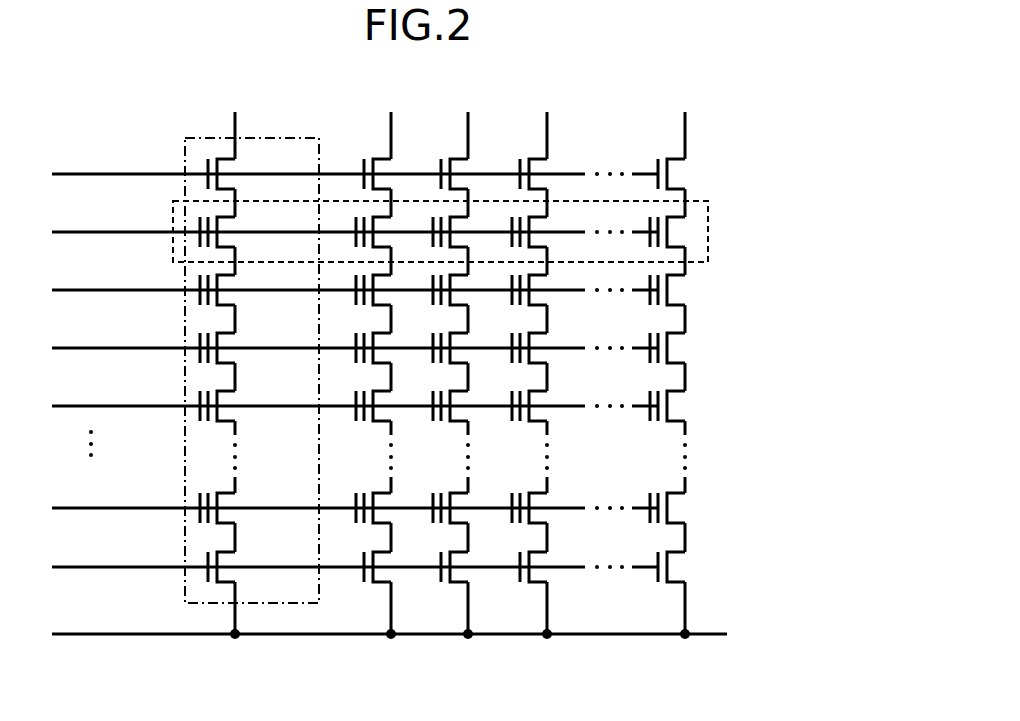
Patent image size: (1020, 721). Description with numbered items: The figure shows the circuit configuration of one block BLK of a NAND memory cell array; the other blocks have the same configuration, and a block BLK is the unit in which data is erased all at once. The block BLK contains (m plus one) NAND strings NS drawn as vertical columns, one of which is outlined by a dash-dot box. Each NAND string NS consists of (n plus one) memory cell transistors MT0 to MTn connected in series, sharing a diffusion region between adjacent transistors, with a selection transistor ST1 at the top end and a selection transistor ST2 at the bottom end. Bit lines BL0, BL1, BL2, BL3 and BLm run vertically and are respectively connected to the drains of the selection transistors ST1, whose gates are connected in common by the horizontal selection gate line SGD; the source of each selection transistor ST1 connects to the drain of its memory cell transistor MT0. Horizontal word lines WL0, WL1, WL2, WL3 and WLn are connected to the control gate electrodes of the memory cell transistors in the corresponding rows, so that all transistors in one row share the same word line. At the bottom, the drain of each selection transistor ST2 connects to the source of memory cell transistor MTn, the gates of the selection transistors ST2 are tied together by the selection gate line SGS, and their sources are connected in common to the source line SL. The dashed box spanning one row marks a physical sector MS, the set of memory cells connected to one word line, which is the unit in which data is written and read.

The block BLK is at (724, 610).
The NAND string NS is at (200, 136).
The physical sector MS is at (708, 228).
The selection transistor ST1 is at (237, 166).
The selection transistor ST2 is at (237, 559).
The memory cell transistor MT0 is at (237, 224).
The memory cell transistor MTn is at (237, 500).
The bit line BL0 is at (235, 360).
The bit line BL1 is at (391, 360).
The bit line BL2 is at (468, 360).
The bit line BL3 is at (547, 360).
The bit line BLm is at (685, 360).
The selection gate line SGD is at (355, 159).
The selection gate line SGS is at (355, 552).
The word line WL0 is at (355, 217).
The word line WL1 is at (355, 275).
The word line WL2 is at (355, 333).
The word line WL3 is at (355, 391).
The word line WLn is at (355, 493).
The source line SL is at (389, 621).